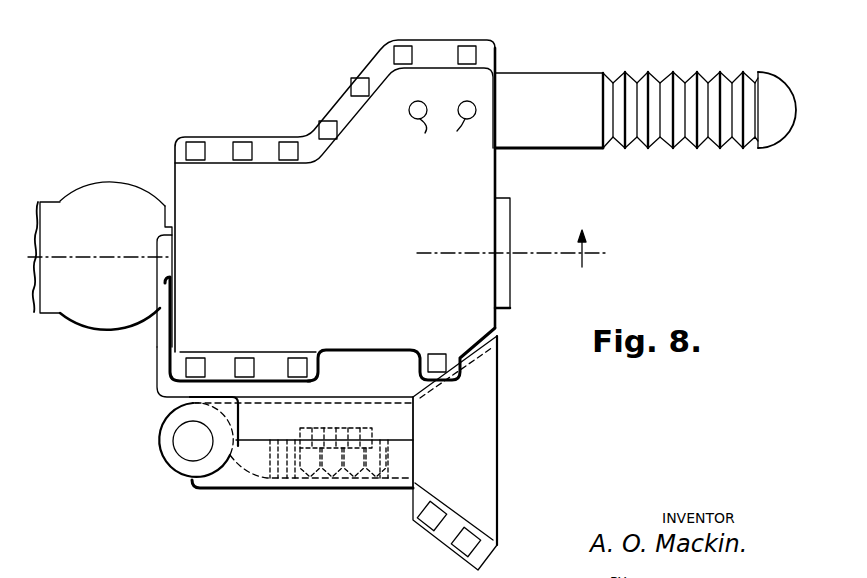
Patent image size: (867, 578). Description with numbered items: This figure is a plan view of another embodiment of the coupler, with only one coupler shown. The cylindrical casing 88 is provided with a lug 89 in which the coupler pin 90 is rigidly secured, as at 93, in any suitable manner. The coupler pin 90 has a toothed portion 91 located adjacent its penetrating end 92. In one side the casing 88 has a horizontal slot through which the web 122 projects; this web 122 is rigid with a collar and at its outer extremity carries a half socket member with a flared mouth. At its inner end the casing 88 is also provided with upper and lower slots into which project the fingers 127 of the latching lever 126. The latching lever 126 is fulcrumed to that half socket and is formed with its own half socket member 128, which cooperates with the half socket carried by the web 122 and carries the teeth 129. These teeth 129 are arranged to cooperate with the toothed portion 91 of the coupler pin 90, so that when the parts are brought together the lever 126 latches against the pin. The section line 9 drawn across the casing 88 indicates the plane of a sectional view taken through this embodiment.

The section line 9- 9 is at (319, 248).
The cylindrical casing 88 is at (342, 208).
The lug 89 is at (442, 96).
The coupler pin 90 is at (562, 67).
The toothed portion 91 is at (700, 65).
The penetrating end 92 is at (778, 130).
The securing point 93 is at (442, 135).
The web 122 is at (342, 363).
The latching lever 126 is at (158, 362).
The fingers 127 is at (173, 255).
The half socket member 128 is at (337, 480).
The teeth 129 is at (285, 478).